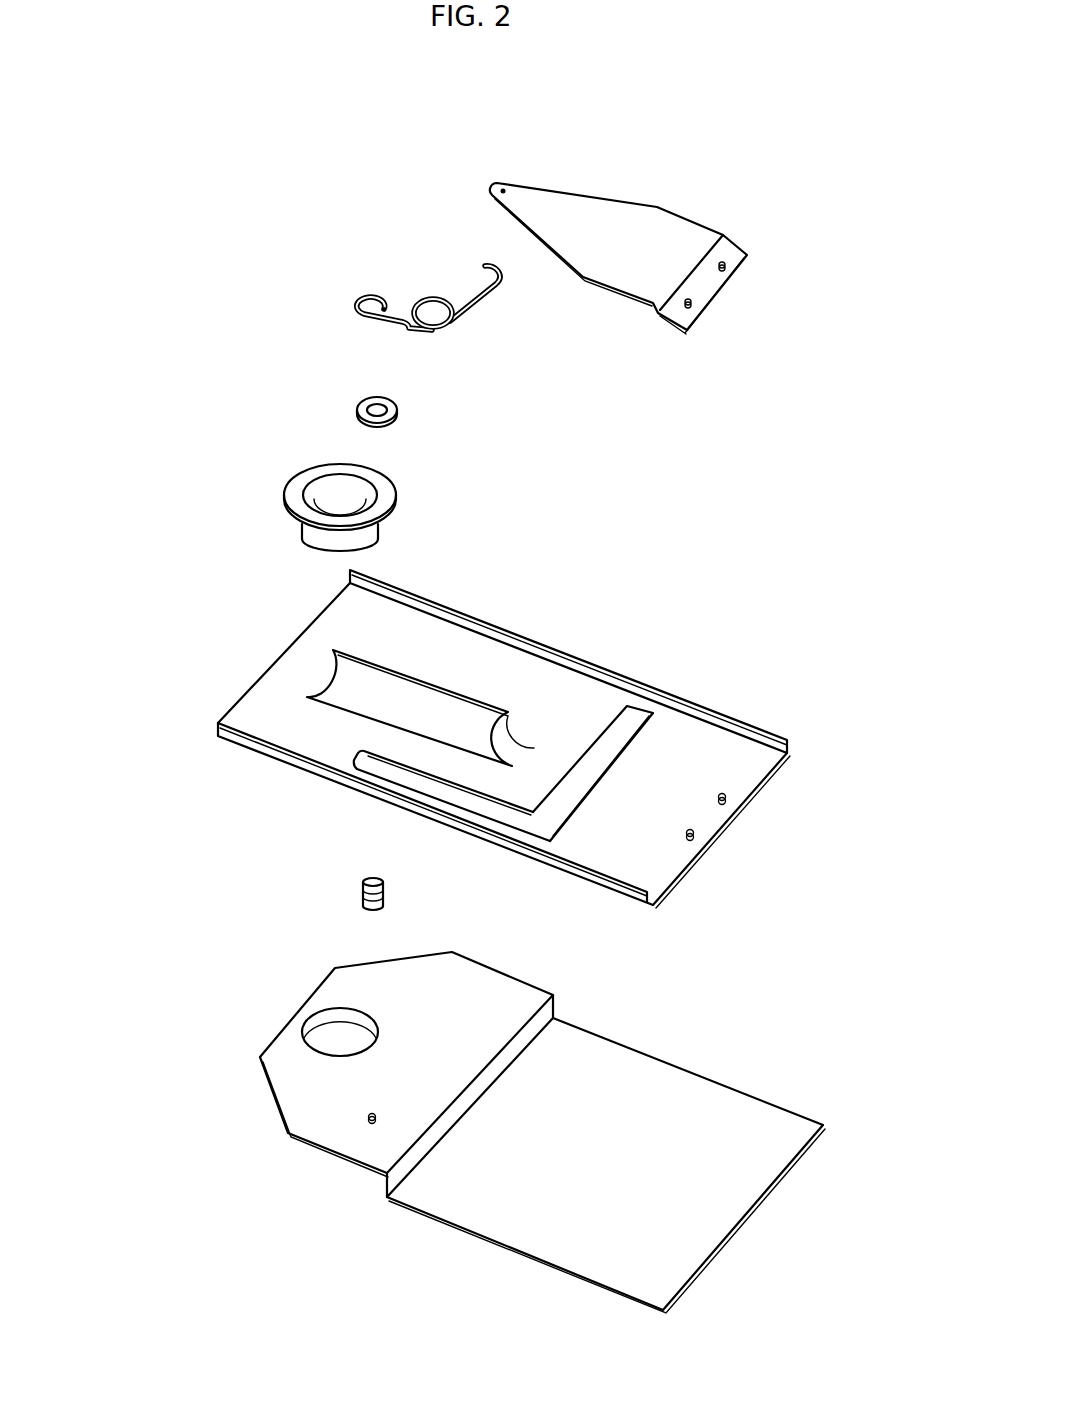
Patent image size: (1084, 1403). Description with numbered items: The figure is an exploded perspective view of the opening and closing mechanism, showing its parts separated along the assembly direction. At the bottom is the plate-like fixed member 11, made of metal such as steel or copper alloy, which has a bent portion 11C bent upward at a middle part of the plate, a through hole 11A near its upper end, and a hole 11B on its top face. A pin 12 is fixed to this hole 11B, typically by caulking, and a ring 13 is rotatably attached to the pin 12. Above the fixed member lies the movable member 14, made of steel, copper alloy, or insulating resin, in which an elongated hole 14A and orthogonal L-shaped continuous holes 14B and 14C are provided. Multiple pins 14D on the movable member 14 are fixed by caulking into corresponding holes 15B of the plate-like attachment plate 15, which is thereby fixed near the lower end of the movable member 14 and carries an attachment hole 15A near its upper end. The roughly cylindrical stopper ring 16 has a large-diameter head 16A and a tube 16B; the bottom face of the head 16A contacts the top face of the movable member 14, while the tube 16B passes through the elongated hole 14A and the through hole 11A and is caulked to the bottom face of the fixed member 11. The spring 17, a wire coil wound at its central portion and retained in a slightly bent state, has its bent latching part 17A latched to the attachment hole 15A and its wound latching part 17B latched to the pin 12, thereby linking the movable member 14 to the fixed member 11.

The fixed member 11 is at (511, 1132).
The through hole 11A is at (333, 1037).
The hole 11B is at (369, 1124).
The bent portion 11C is at (545, 1010).
The pin 12 is at (360, 895).
The ring 13 is at (403, 410).
The movable member 14 is at (512, 739).
The elongated hole 14A is at (333, 685).
The L-shaped continuous hole 14B is at (420, 787).
The L-shaped continuous hole 14C is at (605, 753).
The pins 14D is at (697, 835).
The attachment plate 15 is at (679, 225).
The attachment hole 15A is at (507, 190).
The holes 15B is at (692, 303).
The stopper ring 16 is at (339, 510).
The large-diameter head 16A is at (293, 493).
The tube 16B is at (317, 537).
The spring 17 is at (361, 252).
The latching part 17A is at (486, 265).
The latching part 17B is at (357, 302).